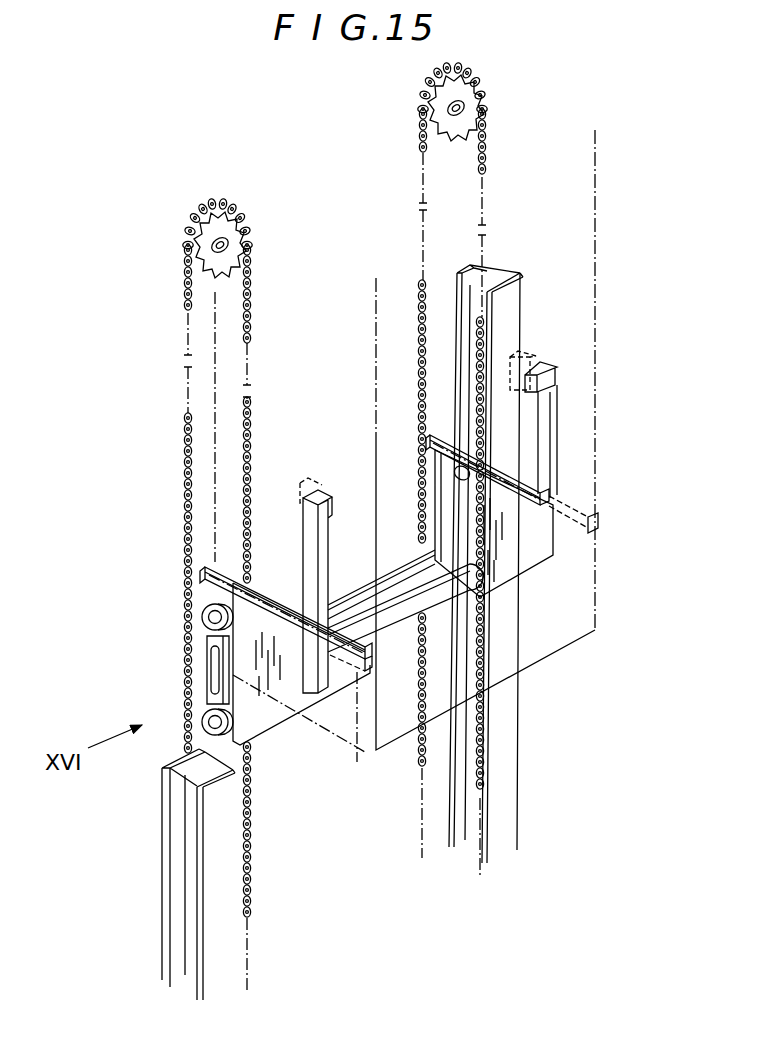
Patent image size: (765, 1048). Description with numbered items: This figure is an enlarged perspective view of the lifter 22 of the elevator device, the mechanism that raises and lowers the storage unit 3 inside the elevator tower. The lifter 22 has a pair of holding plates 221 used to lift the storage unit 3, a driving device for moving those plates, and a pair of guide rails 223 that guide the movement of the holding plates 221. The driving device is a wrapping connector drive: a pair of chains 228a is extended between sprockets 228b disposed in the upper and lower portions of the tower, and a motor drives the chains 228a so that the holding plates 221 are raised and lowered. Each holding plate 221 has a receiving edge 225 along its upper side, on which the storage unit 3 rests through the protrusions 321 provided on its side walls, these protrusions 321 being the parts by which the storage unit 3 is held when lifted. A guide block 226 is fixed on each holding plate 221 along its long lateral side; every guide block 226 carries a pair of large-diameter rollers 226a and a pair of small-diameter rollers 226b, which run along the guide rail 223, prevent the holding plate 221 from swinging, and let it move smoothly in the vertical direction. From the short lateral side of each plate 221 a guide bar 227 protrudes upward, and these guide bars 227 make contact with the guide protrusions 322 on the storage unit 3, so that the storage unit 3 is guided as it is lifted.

The storage unit 3 is at (553, 640).
The lifter 22 is at (120, 433).
The holding plate 221 is at (268, 720).
The guide rail 223 is at (178, 856).
The receiving edge 225 is at (267, 610).
The guide block 226 is at (212, 676).
The large-diameter roller 226a is at (205, 612).
The small-diameter roller 226b is at (210, 657).
The guide bar 227 is at (311, 532).
The chain 228a is at (186, 518).
The sprocket 228b is at (196, 236).
The protrusion 321 is at (599, 521).
The guide protrusion 322 is at (308, 480).